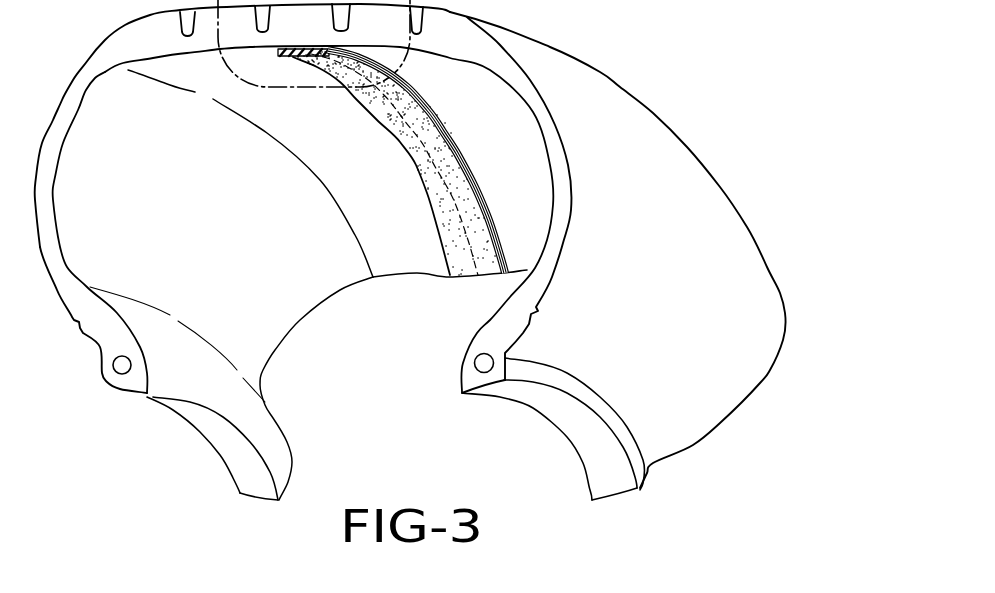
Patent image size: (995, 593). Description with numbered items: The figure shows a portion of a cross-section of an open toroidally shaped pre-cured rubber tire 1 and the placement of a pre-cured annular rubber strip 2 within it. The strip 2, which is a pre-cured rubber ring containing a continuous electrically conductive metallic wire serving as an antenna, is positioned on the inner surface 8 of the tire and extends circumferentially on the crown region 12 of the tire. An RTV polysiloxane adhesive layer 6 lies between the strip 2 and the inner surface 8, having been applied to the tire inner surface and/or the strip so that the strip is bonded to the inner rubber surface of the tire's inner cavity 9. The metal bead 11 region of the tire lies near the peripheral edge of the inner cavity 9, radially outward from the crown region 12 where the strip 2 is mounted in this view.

The pre-cured rubber tire 1 is at (704, 114).
The pre-cured annular rubber strip 2 is at (383, 103).
The adhesive layer 6 is at (448, 132).
The inner surface 8 is at (250, 315).
The inner cavity 9 is at (399, 300).
The metal bead 11 is at (124, 368).
The crown region 12 is at (199, 68).